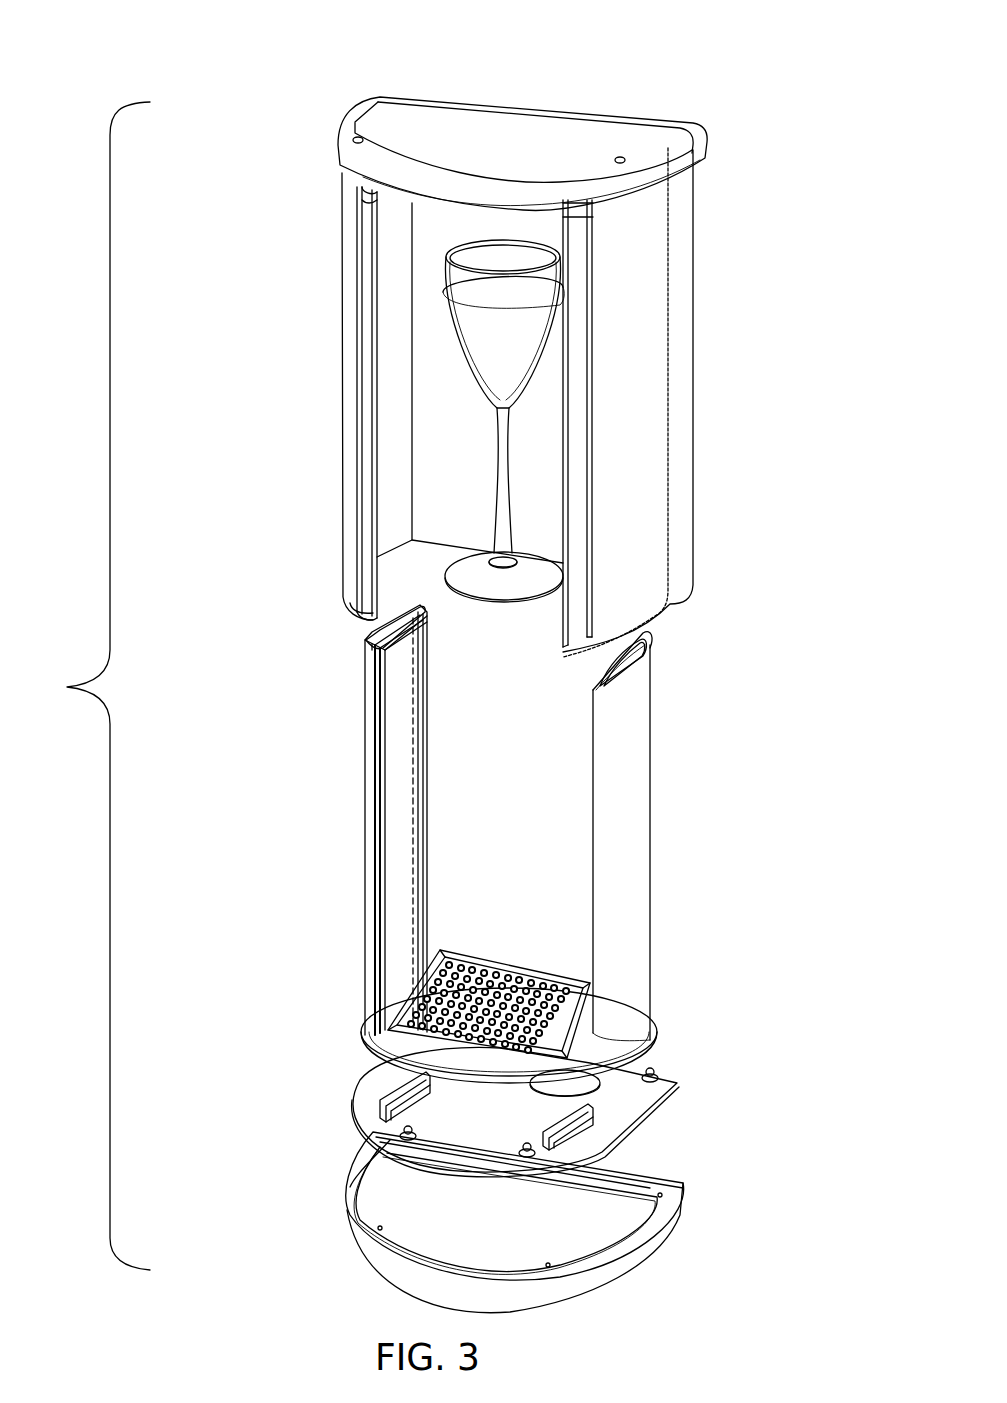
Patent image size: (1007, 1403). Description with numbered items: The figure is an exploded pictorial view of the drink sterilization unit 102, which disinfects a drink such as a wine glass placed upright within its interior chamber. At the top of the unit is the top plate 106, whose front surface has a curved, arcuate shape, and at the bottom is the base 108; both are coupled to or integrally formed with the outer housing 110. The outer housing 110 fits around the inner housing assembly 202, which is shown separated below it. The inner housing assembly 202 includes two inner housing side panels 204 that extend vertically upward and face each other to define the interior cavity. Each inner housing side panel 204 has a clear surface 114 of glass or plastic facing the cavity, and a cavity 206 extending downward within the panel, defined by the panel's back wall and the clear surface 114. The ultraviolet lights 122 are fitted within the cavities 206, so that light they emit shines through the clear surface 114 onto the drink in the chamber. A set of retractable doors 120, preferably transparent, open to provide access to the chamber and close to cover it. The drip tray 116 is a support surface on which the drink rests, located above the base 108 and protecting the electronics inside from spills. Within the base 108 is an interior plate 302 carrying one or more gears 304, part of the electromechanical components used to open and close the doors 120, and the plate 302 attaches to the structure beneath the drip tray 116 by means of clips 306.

The drink sterilization unit 102 is at (221, 68).
The top plate 106 is at (590, 130).
The base 108 is at (356, 1234).
The outer housing 110 is at (662, 320).
The clear surface 114 is at (462, 823).
The drip tray 116 is at (372, 1053).
The retractable doors 120 is at (357, 307).
The ultraviolet lights 122 is at (378, 708).
The inner housing assembly 202 is at (302, 887).
The inner housing side panel 204 is at (365, 777).
The cavity 206 is at (364, 633).
The plate 302 is at (643, 1107).
The gears 304 is at (378, 1070).
The clips 306 is at (597, 1090).